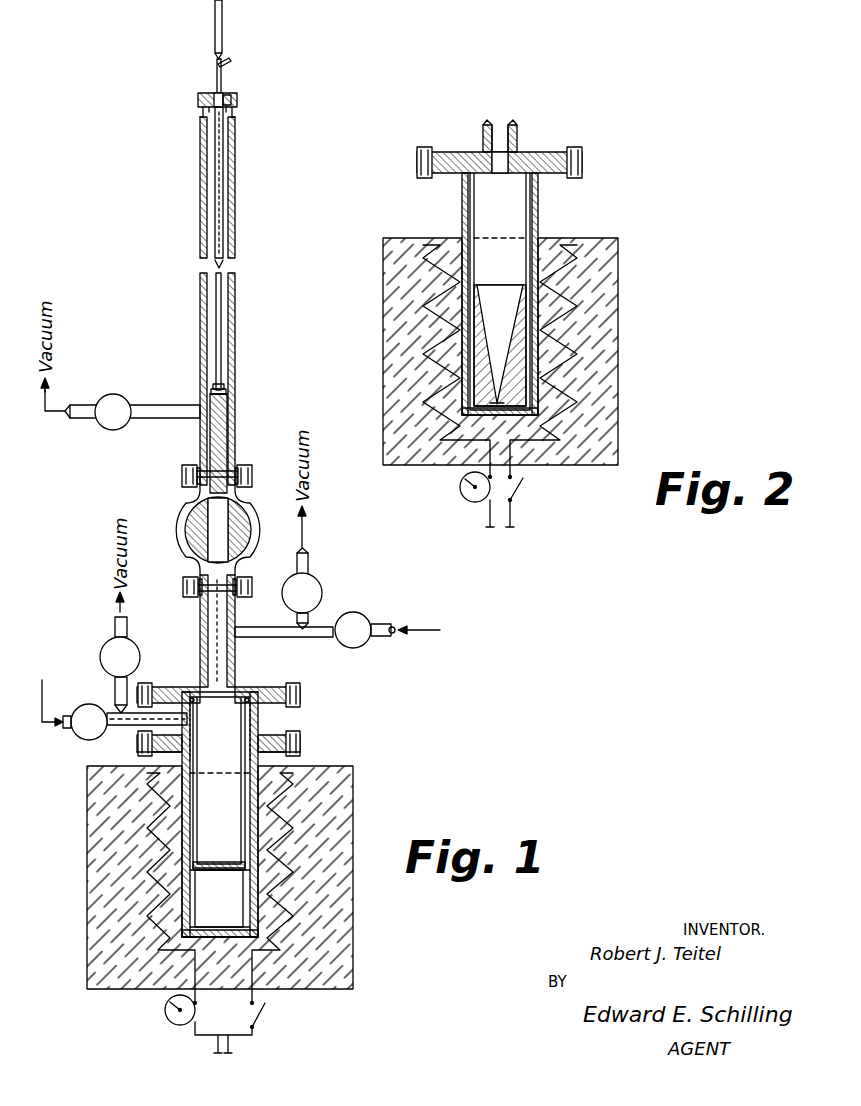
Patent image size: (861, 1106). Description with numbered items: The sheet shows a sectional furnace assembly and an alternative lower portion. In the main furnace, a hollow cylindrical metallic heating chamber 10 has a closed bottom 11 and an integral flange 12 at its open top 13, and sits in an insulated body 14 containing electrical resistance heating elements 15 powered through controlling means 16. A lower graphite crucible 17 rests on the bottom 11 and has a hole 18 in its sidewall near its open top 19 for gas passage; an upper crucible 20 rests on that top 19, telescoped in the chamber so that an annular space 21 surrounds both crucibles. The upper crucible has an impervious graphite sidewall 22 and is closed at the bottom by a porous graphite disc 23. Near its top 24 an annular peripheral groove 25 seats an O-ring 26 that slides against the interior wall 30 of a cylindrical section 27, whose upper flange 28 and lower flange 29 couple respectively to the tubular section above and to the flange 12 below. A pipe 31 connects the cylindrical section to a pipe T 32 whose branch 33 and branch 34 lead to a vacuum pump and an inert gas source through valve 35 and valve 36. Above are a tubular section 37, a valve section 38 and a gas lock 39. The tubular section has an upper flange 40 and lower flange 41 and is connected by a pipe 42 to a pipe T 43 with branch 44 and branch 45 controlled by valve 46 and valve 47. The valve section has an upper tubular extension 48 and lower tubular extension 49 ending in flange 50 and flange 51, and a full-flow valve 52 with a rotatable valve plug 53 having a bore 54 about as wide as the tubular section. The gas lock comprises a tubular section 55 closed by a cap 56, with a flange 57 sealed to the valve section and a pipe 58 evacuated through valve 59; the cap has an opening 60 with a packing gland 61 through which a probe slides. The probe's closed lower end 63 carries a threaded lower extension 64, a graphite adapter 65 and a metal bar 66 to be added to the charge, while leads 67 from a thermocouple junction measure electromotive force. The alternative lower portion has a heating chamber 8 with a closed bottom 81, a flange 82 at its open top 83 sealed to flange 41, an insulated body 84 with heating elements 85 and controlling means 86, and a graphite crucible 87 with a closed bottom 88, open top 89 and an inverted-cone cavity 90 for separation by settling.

In FIG. 2, the heating chamber 8 is at (462, 212).
In FIG. 1, the heating chamber 10 is at (290, 822).
In FIG. 1, the closed bottom 11 is at (250, 965).
In FIG. 1, the flange 12 is at (300, 745).
In FIG. 1, the open top 13 is at (260, 756).
In FIG. 1, the insulated body 14 is at (340, 915).
In FIG. 1, the electrical resistance heating elements 15 is at (150, 862).
In FIG. 1, the controlling means 16 is at (263, 1032).
In FIG. 1, the lower crucible 17 is at (190, 940).
In FIG. 1, the hole 18 is at (196, 880).
In FIG. 1, the open top 19 is at (240, 880).
In FIG. 1, the upper crucible 20 is at (255, 793).
In FIG. 1, the annular space 21 is at (180, 754).
In FIG. 1, the sidewall 22 is at (197, 800).
In FIG. 1, the porous graphite disc 23 is at (220, 862).
In FIG. 1, the top 24 is at (210, 700).
In FIG. 1, the annular peripheral groove 25 is at (246, 701).
In FIG. 1, the O-ring 26 is at (248, 706).
In FIG. 1, the cylindrical section 27 is at (262, 720).
In FIG. 1, the flange 28 is at (300, 697).
In FIG. 1, the flange 29 is at (298, 740).
In FIG. 1, the interior wall 30 is at (252, 720).
In FIG. 1, the pipe 31 is at (130, 722).
In FIG. 1, the pipe T 32 is at (85, 703).
In FIG. 1, the branch 33 is at (128, 627).
In FIG. 1, the branch 34 is at (72, 722).
In FIG. 1, the valve 35 is at (140, 657).
In FIG. 1, the valve 36 is at (83, 738).
In FIG. 1, the tubular section 37 is at (195, 626).
In FIG. 2, the tubular section 37 is at (525, 120).
In FIG. 1, the valve section 38 is at (180, 547).
In FIG. 1, the gas lock 39 is at (196, 290).
In FIG. 1, the upper flange 40 is at (252, 591).
In FIG. 1, the lower flange 41 is at (298, 688).
In FIG. 2, the lower flange 41 is at (582, 153).
In FIG. 1, the pipe 42 is at (262, 637).
In FIG. 1, the pipe T 43 is at (331, 613).
In FIG. 1, the branch 44 is at (308, 560).
In FIG. 1, the branch 45 is at (370, 643).
In FIG. 1, the valve 46 is at (318, 585).
In FIG. 1, the valve 47 is at (366, 619).
In FIG. 1, the upper tubular extension 48 is at (200, 484).
In FIG. 1, the lower tubular extension 49 is at (238, 576).
In FIG. 1, the flange 50 is at (182, 478).
In FIG. 1, the flange 51 is at (252, 586).
In FIG. 1, the full-flow valve 52 is at (252, 524).
In FIG. 1, the rotatable valve plug 53 is at (238, 512).
In FIG. 1, the bore 54 is at (222, 540).
In FIG. 1, the tubular section 55 is at (202, 200).
In FIG. 1, the cap 56 is at (237, 101).
In FIG. 1, the flange 57 is at (185, 470).
In FIG. 1, the pipe 58 is at (165, 404).
In FIG. 1, the valve 59 is at (104, 394).
In FIG. 1, the opening 60 is at (229, 95).
In FIG. 1, the packing gland 61 is at (214, 92).
In FIG. 1, the lower end 63 is at (221, 387).
In FIG. 1, the lower extension 64 is at (223, 391).
In FIG. 1, the graphite adapter 65 is at (227, 396).
In FIG. 1, the metal bar 66 is at (224, 432).
In FIG. 1, the leads 67 is at (227, 61).
In FIG. 2, the closed bottom 81 is at (520, 420).
In FIG. 2, the flange 82 is at (582, 166).
In FIG. 2, the open top 83 is at (540, 178).
In FIG. 2, the insulated body 84 is at (618, 350).
In FIG. 2, the electrical resistance heating elements 85 is at (560, 262).
In FIG. 2, the controlling means 86 is at (528, 498).
In FIG. 2, the crucible 87 is at (520, 330).
In FIG. 2, the closed bottom 88 is at (518, 397).
In FIG. 2, the open top 89 is at (520, 285).
In FIG. 2, the cavity 90 is at (507, 336).